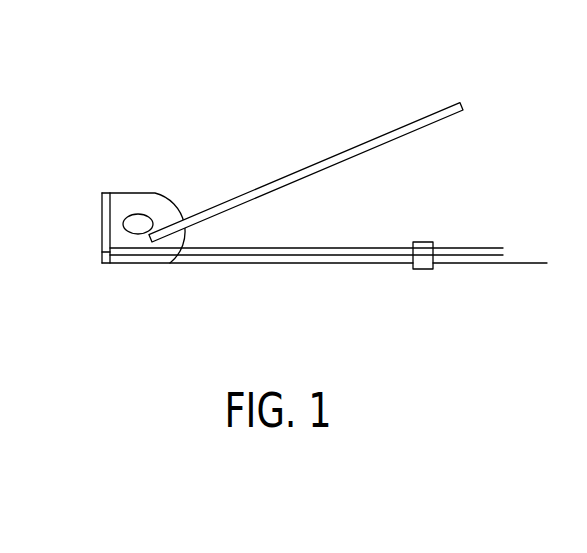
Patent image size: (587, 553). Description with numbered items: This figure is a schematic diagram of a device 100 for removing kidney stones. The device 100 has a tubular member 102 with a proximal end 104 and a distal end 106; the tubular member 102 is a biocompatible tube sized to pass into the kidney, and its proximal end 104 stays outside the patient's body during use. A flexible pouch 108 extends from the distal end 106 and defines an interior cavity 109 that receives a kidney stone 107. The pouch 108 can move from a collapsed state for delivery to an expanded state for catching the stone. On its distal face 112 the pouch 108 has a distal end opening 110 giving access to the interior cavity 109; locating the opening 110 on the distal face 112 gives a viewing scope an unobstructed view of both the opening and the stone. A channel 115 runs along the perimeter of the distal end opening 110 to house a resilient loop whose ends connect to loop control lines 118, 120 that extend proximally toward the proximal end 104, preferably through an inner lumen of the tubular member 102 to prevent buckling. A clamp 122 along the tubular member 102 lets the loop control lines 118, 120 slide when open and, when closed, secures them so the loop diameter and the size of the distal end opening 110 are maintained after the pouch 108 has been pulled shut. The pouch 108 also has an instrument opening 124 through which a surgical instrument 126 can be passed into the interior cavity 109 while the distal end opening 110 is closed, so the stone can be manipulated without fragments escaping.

The device 100 is at (97, 90).
The tubular member 102 is at (344, 264).
The proximal end 104 is at (527, 280).
The distal end 106 is at (107, 290).
The kidney stone 107 is at (140, 228).
The flexible pouch 108 is at (150, 193).
The interior cavity 109 is at (129, 206).
The distal end opening 110 is at (90, 231).
The distal face 112 is at (100, 203).
The channel 115 is at (102, 252).
The loop control line 118 is at (470, 256).
The loop control line 120 is at (478, 248).
The clamp 122 is at (423, 271).
The instrument opening 124 is at (181, 218).
The surgical instrument 126 is at (417, 122).